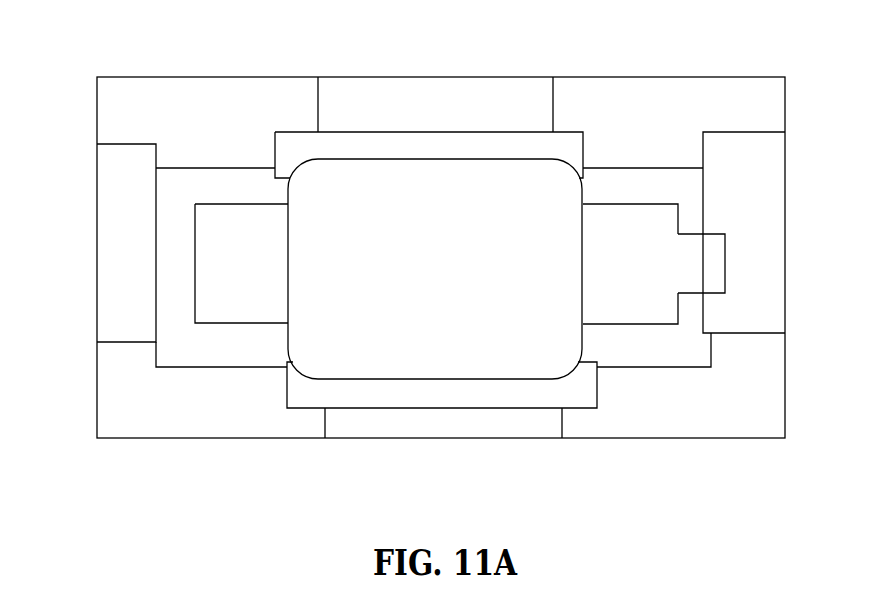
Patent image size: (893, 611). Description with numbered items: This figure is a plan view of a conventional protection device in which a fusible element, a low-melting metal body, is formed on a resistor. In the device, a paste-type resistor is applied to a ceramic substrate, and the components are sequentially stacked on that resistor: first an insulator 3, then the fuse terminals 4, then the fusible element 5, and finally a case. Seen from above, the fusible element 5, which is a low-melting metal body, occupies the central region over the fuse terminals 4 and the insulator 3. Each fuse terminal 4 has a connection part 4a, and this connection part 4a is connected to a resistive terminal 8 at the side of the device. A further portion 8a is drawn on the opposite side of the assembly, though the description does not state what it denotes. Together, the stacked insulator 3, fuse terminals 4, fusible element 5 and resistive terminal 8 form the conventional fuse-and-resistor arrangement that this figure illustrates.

The insulator 3 is at (633, 183).
The fuse terminal 4 is at (660, 313).
The connection part 4a is at (708, 263).
The fusible element 5 is at (422, 321).
The resistive terminal 8 is at (755, 174).
The left block 8a is at (123, 197).